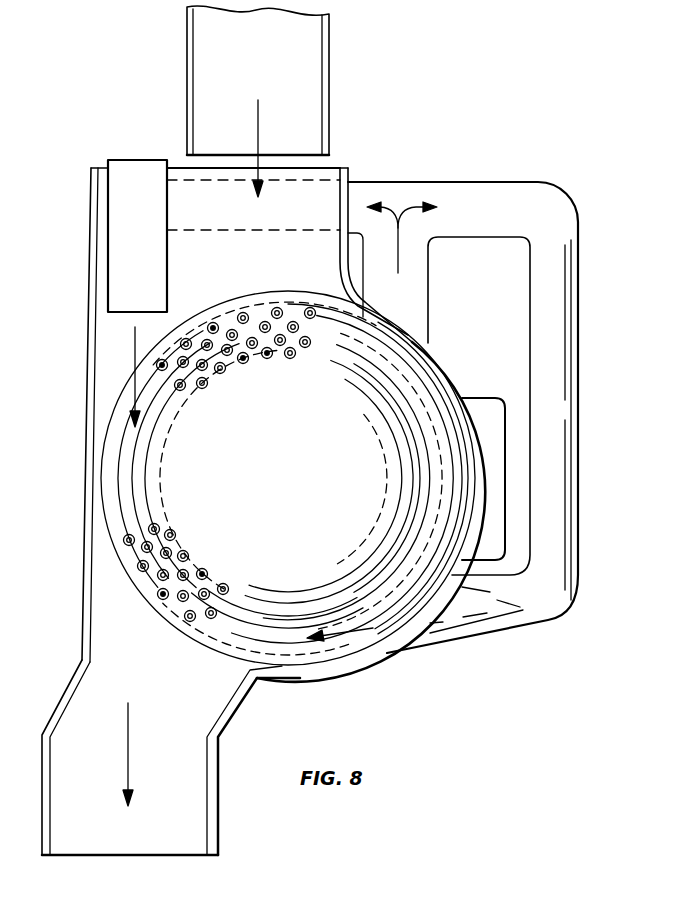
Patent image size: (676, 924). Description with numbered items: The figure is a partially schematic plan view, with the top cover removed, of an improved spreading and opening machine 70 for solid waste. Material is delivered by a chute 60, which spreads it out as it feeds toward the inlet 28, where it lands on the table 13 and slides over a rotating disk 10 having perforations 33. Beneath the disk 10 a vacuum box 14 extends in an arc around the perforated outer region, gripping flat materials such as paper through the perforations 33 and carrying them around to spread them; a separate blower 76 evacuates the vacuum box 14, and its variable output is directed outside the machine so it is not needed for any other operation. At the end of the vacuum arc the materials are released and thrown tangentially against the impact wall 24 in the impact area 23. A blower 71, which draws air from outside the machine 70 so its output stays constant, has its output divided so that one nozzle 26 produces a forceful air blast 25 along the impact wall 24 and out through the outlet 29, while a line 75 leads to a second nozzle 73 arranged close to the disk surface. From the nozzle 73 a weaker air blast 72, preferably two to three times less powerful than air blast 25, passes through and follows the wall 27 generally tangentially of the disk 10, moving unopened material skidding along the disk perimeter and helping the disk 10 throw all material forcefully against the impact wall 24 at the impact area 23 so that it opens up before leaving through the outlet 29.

The disk 10 is at (362, 482).
The table 13 is at (250, 270).
The vacuum box 14 is at (302, 294).
The impact area 23 is at (107, 617).
The impact wall 24 is at (85, 518).
The air blast 25 is at (135, 347).
The nozzle 26 is at (145, 234).
The wall 27 is at (440, 365).
The inlet 28 is at (340, 168).
The outlet 29 is at (197, 823).
The perforations 33 is at (262, 360).
The chute 60 is at (256, 78).
The machine 70 is at (75, 416).
The blower 71 is at (418, 295).
The air blast 72 is at (357, 630).
The nozzle 73 is at (565, 572).
The line 75 is at (510, 190).
The blower 76 is at (487, 398).